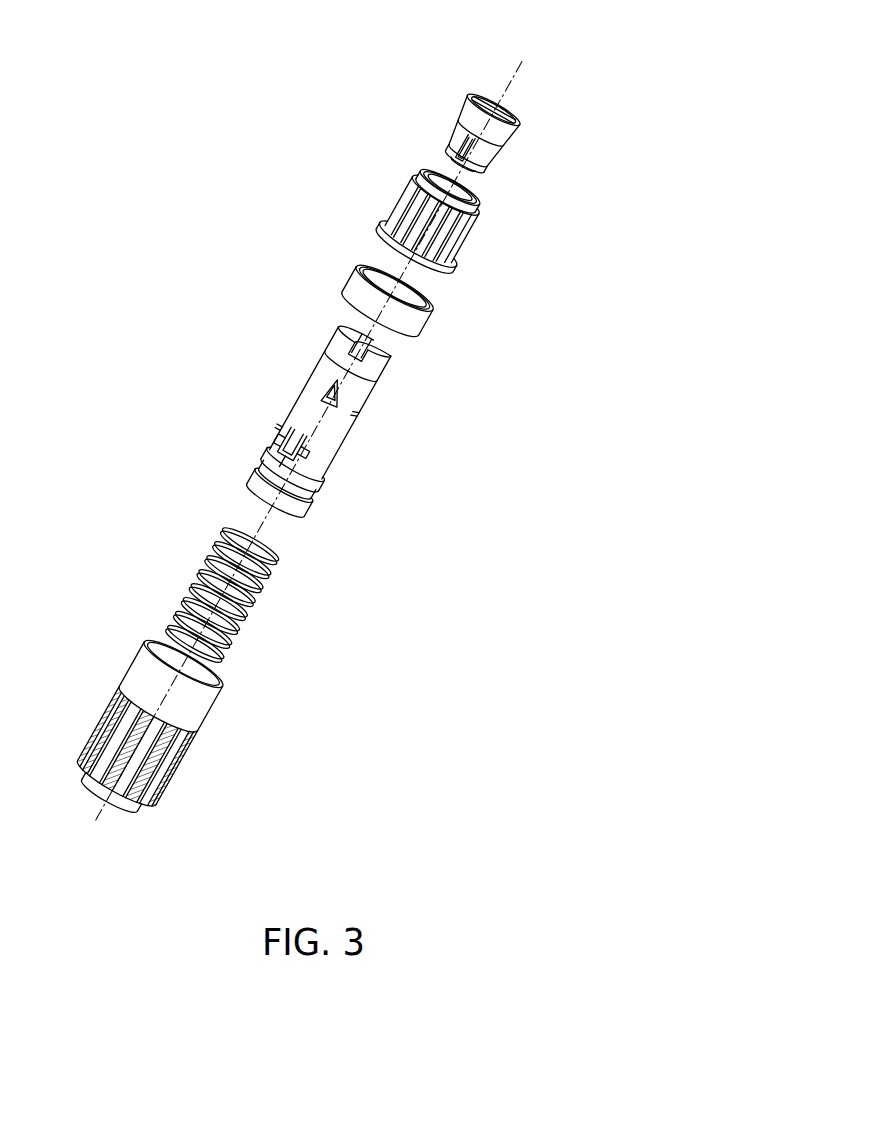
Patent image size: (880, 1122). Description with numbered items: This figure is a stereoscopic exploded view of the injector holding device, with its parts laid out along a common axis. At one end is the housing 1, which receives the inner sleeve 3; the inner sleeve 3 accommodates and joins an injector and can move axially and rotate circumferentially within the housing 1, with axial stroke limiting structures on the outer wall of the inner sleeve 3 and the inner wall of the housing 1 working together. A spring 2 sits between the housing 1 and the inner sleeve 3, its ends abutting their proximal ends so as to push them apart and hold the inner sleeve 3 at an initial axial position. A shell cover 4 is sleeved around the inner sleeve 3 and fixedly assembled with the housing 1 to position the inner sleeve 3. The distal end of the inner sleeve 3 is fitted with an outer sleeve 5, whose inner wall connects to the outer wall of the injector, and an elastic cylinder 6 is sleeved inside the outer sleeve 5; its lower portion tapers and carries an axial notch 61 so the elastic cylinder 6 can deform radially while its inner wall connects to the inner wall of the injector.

The housing 1 is at (115, 675).
The spring 2 is at (193, 578).
The inner sleeve 3 is at (300, 383).
The shell cover 4 is at (350, 278).
The outer sleeve 5 is at (395, 203).
The elastic cylinder 6 is at (460, 112).
The axial notch 61 is at (462, 158).